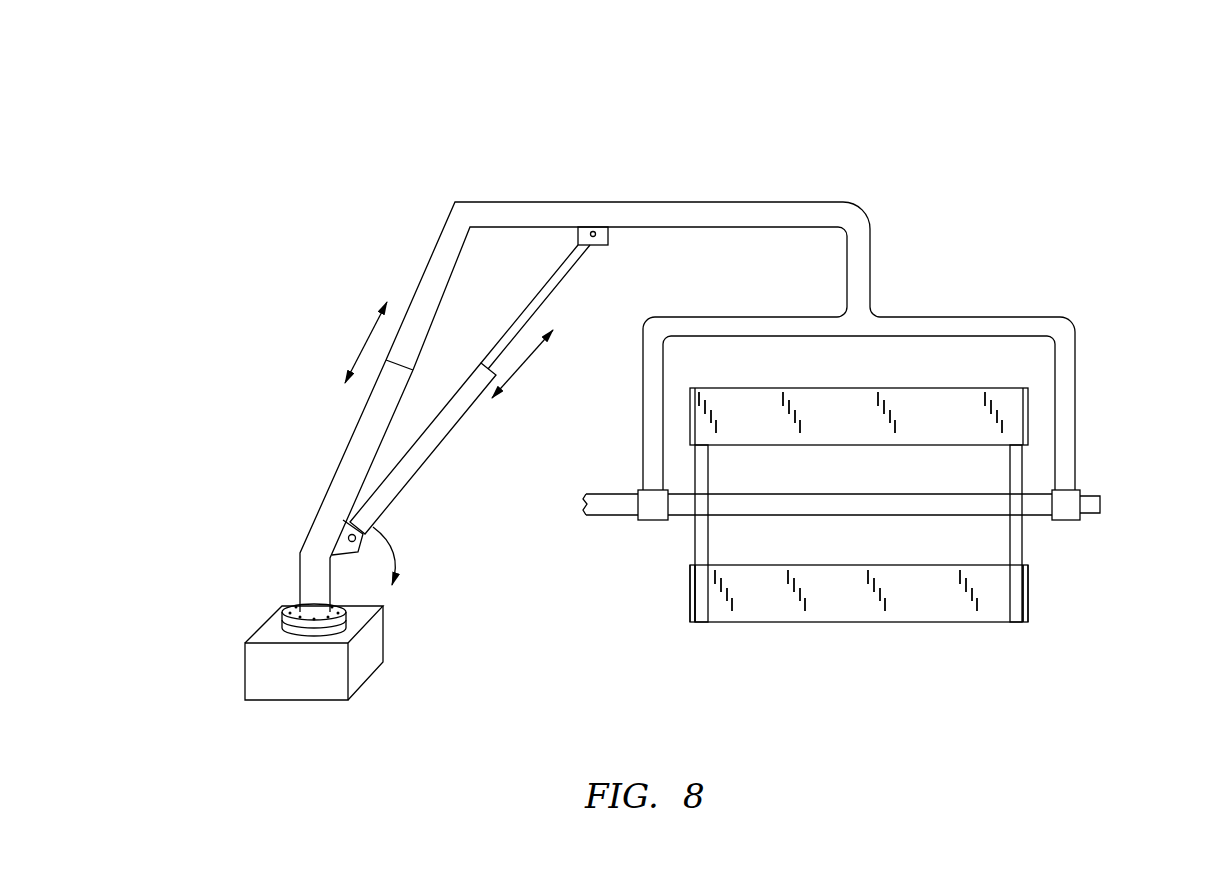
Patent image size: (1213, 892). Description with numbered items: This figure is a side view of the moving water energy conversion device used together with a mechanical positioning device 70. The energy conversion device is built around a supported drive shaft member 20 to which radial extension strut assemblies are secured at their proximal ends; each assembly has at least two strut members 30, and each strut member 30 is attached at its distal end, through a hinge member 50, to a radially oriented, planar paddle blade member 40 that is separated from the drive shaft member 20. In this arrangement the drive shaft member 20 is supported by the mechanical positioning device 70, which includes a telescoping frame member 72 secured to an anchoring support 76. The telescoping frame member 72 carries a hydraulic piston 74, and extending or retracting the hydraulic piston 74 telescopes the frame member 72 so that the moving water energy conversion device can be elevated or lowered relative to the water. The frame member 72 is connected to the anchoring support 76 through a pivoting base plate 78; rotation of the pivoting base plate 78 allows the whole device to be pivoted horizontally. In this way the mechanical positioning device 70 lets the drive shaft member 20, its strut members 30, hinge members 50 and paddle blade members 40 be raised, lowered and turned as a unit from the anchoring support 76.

The mechanical positioning device 70 is at (853, 142).
The telescoping frame member 72 is at (428, 262).
The hydraulic piston 74 is at (425, 463).
The anchoring support 76 is at (370, 650).
The pivoting base plate 78 is at (285, 607).
The paddle blade member 40 is at (853, 403).
The strut member 30 is at (710, 482).
The drive shaft member 20 is at (807, 495).
The hinge member 50 is at (692, 612).